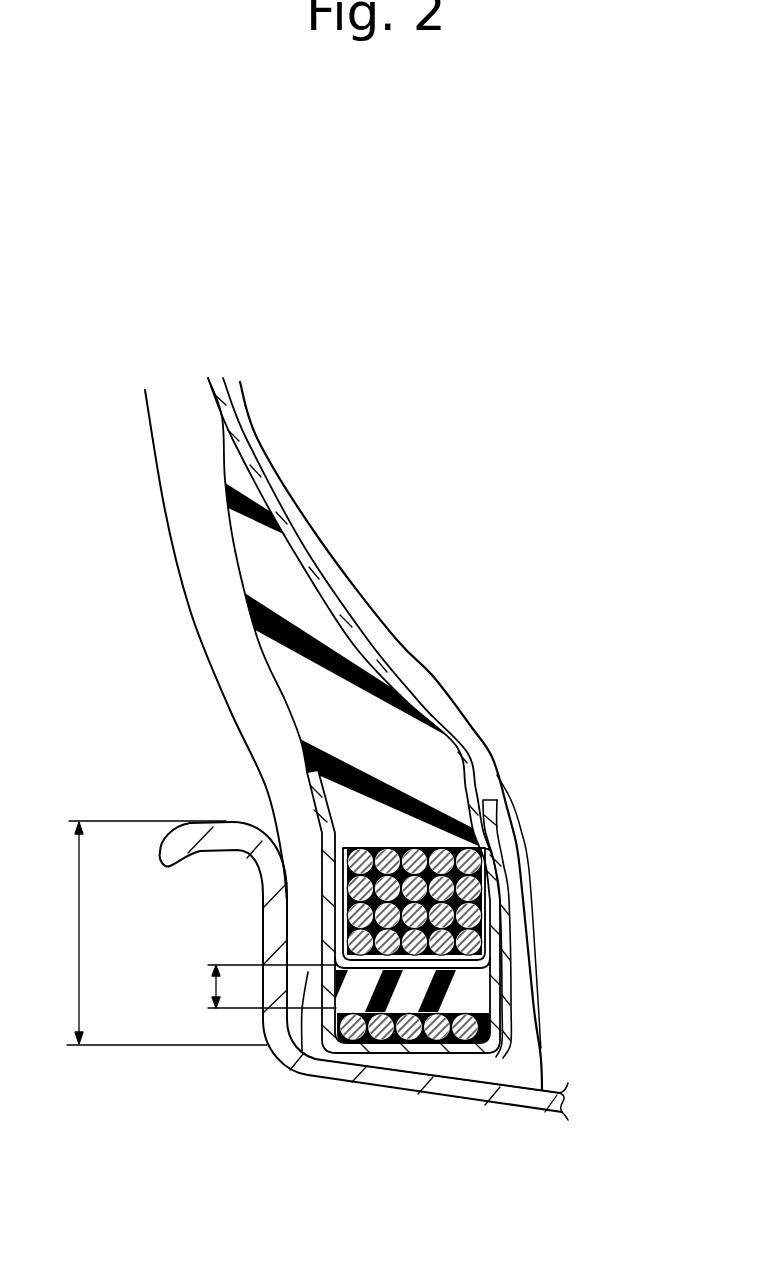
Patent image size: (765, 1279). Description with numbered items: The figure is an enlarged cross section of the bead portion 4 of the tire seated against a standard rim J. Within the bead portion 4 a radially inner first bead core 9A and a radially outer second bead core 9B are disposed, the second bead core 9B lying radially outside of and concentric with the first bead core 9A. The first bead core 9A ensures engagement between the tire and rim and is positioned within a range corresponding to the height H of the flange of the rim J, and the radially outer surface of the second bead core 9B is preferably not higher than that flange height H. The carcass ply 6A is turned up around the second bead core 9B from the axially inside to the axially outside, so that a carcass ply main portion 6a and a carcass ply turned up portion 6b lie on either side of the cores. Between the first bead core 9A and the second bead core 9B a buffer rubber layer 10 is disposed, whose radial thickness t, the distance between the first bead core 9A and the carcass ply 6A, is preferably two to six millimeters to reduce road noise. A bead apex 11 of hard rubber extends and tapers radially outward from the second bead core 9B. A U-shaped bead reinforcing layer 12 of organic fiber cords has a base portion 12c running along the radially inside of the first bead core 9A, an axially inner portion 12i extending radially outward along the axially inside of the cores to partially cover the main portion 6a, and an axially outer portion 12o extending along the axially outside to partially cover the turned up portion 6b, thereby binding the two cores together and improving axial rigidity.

The bead portion 4 is at (261, 805).
The carcass ply 6A is at (388, 652).
The carcass ply main portion 6a is at (473, 758).
The carcass ply turned up portion 6b is at (309, 790).
The first bead core 9A is at (470, 1022).
The second bead core 9B is at (466, 884).
The buffer rubber layer 10 is at (470, 990).
The bead apex 11 is at (295, 592).
The bead reinforcing layer 12 is at (483, 1183).
The axially outer portion 12o is at (305, 1055).
The base portion 12c is at (410, 1054).
The axially inner portion 12i is at (441, 1045).
The height of the flange H is at (167, 933).
The thickness of the buffer rubber layer t is at (214, 990).
The standard rim J is at (268, 1033).